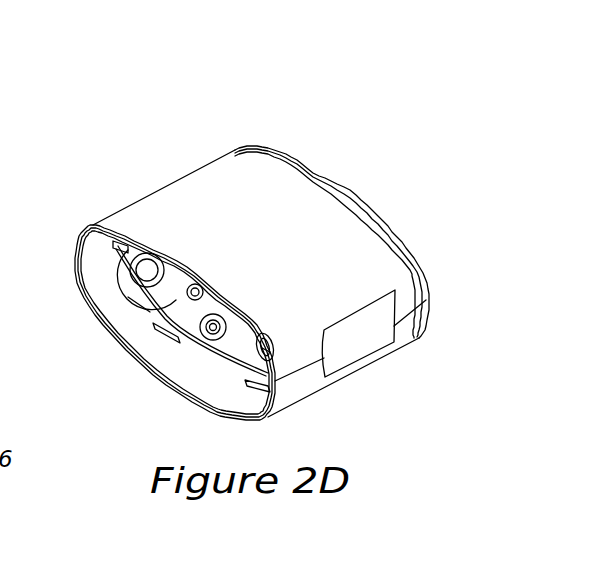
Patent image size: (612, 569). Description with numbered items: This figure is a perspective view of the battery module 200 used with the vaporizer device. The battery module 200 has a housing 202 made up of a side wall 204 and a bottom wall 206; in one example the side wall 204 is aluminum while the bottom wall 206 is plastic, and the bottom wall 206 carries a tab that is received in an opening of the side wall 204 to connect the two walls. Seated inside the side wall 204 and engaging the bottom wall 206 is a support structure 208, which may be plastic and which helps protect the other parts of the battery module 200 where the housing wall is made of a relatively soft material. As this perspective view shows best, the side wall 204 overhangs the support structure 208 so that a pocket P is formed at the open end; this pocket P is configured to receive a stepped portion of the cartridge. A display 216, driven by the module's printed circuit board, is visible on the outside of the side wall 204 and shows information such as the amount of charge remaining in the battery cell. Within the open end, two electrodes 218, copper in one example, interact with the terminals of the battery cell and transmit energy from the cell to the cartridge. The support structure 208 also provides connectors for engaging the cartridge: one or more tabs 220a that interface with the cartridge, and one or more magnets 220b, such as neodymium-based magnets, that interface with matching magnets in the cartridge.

The battery module 200 is at (434, 270).
The housing 202 is at (86, 221).
The side wall 204 is at (163, 207).
The bottom wall 206 is at (396, 227).
The support structure 208 is at (117, 338).
The display 216 is at (355, 362).
The electrodes 218 is at (229, 313).
The tabs 220a is at (158, 336).
The magnets 220b is at (128, 297).
The pocket P is at (86, 276).